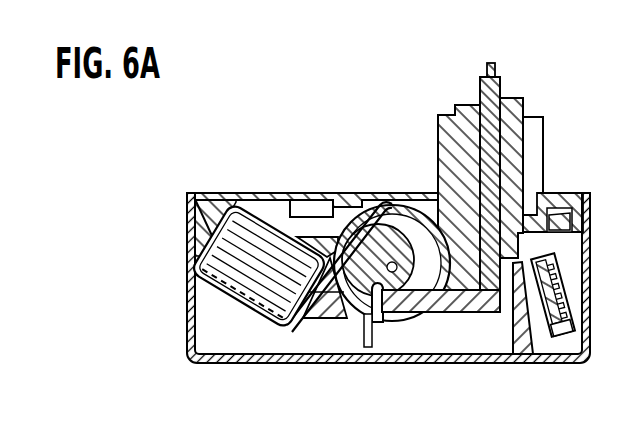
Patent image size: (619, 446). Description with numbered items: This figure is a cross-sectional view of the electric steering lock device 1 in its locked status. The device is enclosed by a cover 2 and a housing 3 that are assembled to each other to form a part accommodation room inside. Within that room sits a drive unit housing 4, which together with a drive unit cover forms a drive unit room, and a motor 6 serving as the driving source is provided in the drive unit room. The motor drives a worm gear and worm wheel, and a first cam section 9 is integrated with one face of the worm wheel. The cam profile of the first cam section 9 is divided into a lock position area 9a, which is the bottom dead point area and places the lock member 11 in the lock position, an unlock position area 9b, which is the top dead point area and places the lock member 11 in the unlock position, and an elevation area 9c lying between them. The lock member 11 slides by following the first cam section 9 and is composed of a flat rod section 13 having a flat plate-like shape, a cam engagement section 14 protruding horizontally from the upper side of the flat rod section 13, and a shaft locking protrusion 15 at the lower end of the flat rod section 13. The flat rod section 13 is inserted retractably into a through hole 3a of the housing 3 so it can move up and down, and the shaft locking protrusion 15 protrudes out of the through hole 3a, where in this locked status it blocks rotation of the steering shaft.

The electric steering lock device 1 is at (180, 191).
The cover 2 is at (190, 302).
The housing 3 is at (213, 200).
The through hole 3a is at (490, 145).
The drive unit housing 4 is at (268, 213).
The motor 6 is at (215, 267).
The first cam section 9 is at (345, 203).
The lock position area 9a is at (382, 300).
The unlock position area 9b is at (346, 305).
The elevation area 9c is at (388, 217).
The lock member 11 is at (511, 78).
The flat rod section 13 is at (482, 108).
The cam engagement section 14 is at (450, 306).
The shaft locking protrusion 15 is at (488, 73).